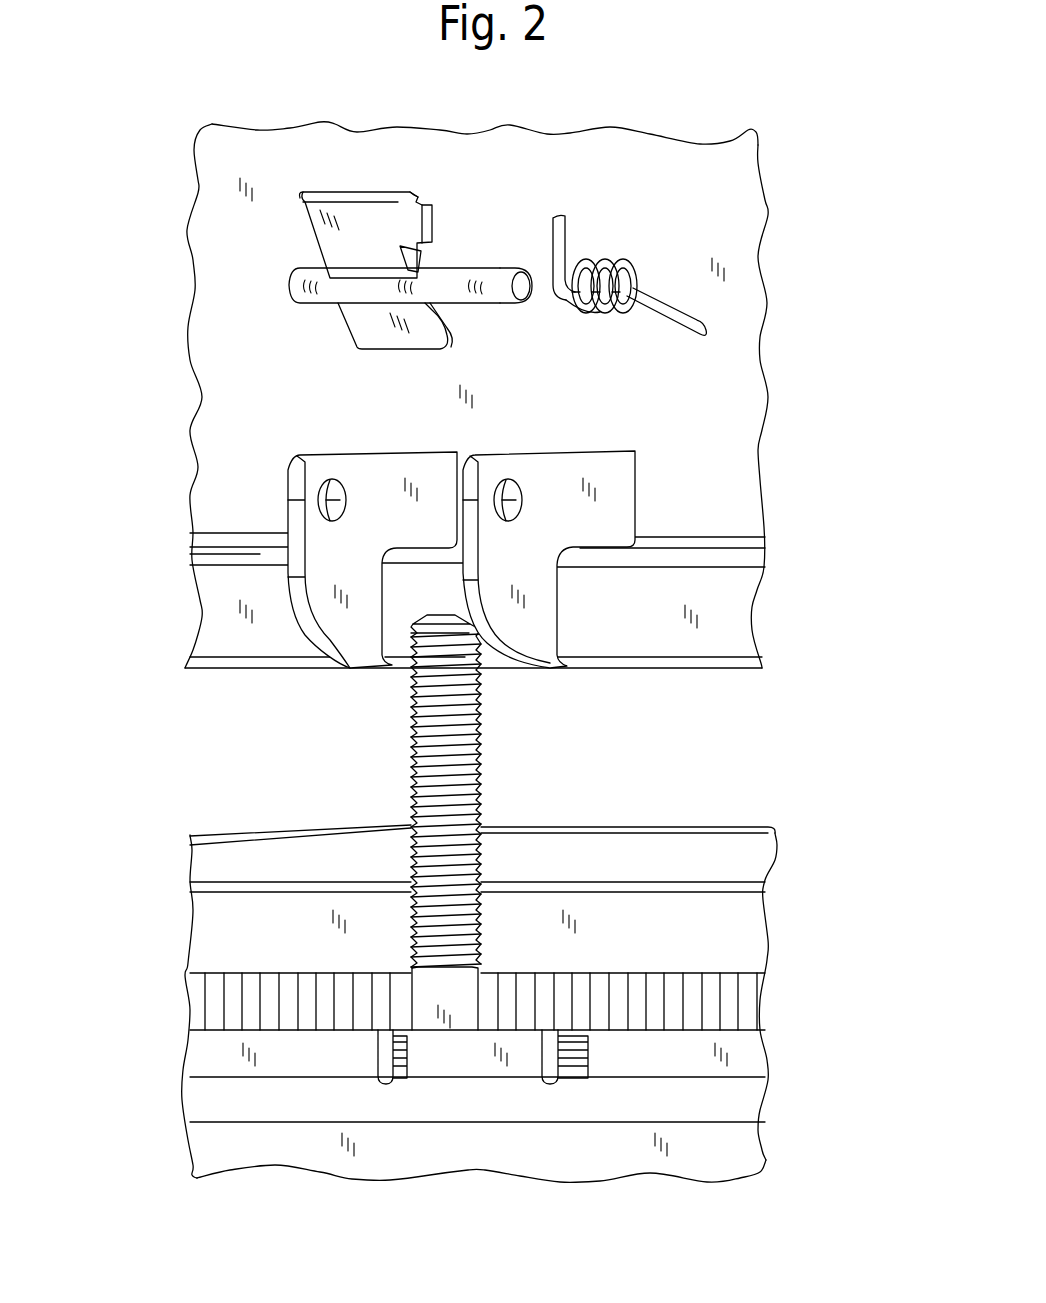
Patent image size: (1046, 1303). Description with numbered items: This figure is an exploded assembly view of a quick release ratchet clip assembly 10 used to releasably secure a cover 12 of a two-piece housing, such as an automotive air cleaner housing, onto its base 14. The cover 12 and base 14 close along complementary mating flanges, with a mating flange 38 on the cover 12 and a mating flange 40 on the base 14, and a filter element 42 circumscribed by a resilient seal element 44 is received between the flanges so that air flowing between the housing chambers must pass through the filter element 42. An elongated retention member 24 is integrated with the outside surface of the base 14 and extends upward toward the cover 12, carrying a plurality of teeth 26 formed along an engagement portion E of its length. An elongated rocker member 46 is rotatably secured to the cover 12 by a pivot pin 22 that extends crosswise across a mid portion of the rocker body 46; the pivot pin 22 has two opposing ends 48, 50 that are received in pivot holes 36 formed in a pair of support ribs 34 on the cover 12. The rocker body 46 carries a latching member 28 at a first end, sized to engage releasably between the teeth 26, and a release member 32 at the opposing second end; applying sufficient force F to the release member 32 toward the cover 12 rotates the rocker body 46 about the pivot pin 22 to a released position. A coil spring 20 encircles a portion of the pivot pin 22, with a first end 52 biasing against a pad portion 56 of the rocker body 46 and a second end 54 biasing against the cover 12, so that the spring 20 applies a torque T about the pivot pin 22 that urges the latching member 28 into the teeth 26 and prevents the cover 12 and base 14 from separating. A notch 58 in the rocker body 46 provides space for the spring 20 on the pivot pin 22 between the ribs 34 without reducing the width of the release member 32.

The quick release ratchet clip assembly 10 is at (818, 188).
The cover 12 is at (722, 197).
The base 14 is at (218, 1157).
The spring 20 is at (655, 281).
The pivot pin 22 is at (460, 276).
The elongated retention member 24 is at (450, 822).
The teeth 26 is at (430, 692).
The latching member 28 is at (455, 332).
The release member 32 is at (343, 190).
The support ribs 34 is at (324, 572).
The pivot hole 36 is at (340, 500).
The mating flange 38 is at (715, 605).
The mating flange 40 is at (742, 1052).
The filter element 42 is at (546, 1003).
The resilient seal element 44 is at (632, 947).
The elongated rocker member 46 is at (380, 252).
The first end of pivot pin 48 is at (290, 288).
The second end of pivot pin 50 is at (525, 290).
The first end of spring 52 is at (567, 240).
The second end of spring 54 is at (703, 337).
The pad portion 56 is at (433, 214).
The notch 58 is at (462, 280).
The engagement portion E is at (45, 616).
The force F is at (314, 203).
The torque T is at (536, 263).